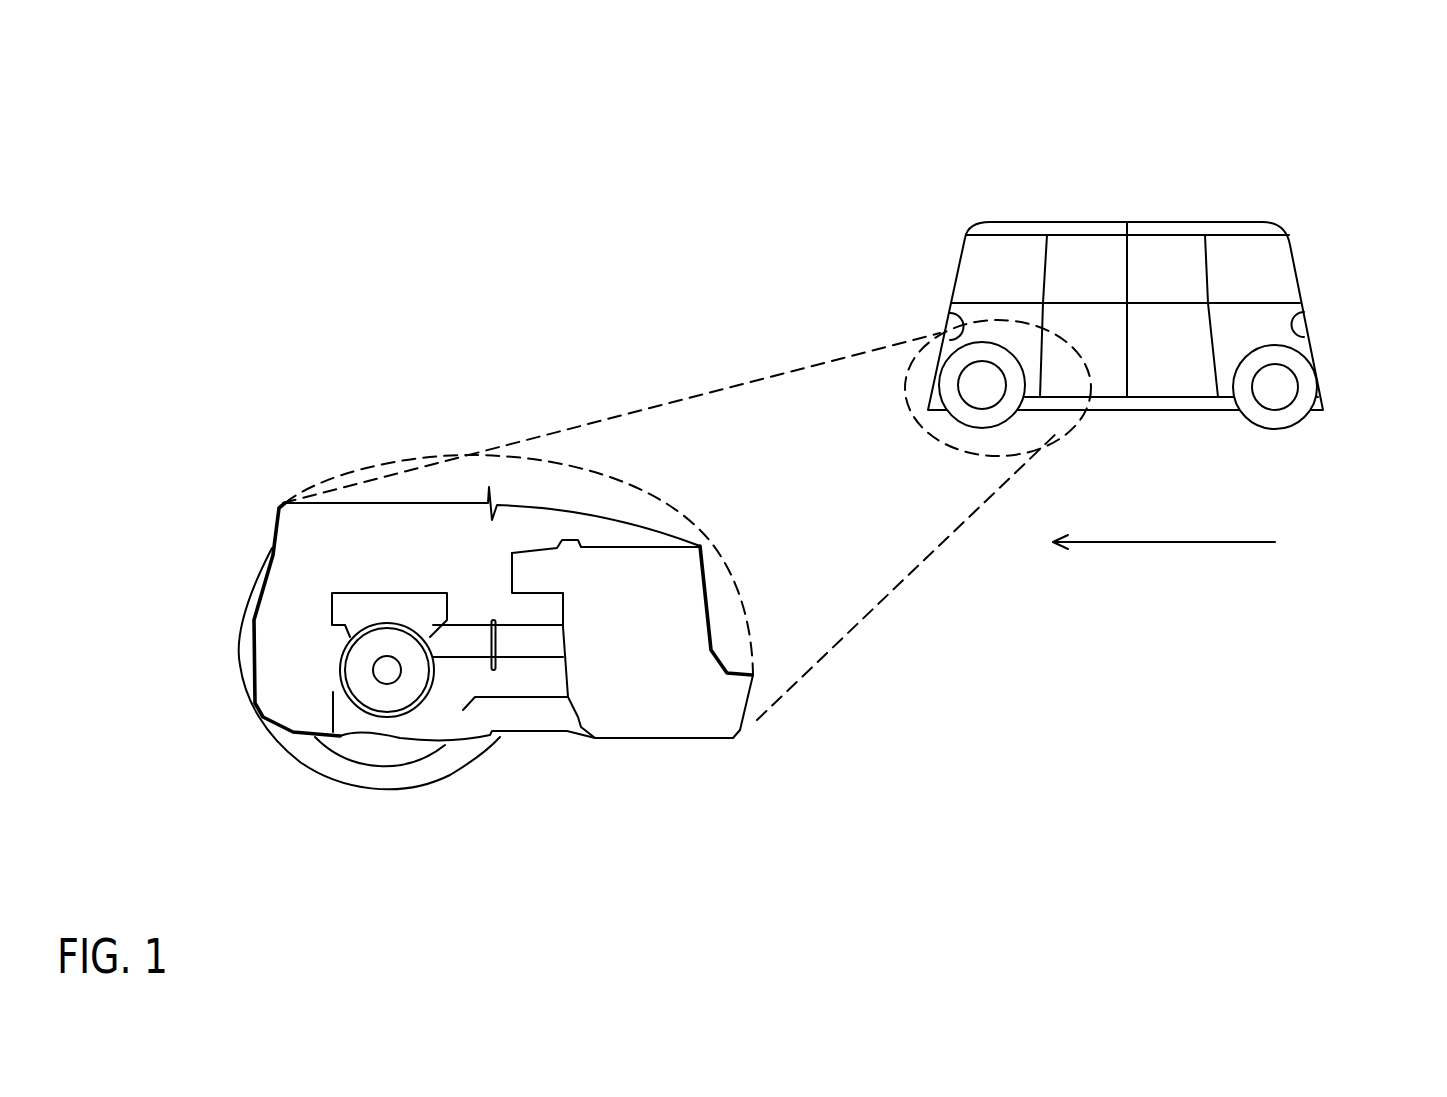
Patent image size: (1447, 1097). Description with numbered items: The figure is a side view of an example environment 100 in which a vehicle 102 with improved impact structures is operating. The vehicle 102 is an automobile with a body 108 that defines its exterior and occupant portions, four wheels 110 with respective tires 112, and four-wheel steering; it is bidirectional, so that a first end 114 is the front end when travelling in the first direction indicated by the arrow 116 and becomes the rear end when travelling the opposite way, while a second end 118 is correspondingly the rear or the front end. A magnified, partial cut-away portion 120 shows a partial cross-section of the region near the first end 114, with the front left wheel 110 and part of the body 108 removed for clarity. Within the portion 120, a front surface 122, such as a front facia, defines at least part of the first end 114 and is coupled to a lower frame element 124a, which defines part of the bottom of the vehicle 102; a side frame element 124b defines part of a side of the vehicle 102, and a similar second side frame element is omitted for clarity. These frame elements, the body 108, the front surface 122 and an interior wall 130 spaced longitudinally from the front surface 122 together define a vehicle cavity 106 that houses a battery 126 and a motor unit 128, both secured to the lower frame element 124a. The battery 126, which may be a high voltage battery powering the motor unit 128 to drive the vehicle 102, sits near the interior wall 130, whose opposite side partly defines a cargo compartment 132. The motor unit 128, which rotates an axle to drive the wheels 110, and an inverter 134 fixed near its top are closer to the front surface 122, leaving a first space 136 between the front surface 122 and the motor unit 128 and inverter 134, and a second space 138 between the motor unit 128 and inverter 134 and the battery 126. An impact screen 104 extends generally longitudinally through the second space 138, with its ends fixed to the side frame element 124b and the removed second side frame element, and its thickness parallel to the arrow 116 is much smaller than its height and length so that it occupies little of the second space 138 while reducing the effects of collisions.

The environment 100 is at (212, 83).
The vehicle 102 is at (965, 252).
The impact screen 104 is at (493, 622).
The vehicle cavity 106 is at (411, 544).
The body 108 is at (1018, 315).
The wheels 110 is at (1267, 397).
The tires 112 is at (1288, 417).
The first end 114 is at (955, 297).
The arrow 116 is at (1164, 533).
The second end 118 is at (1297, 295).
The partial cut-away portion 120 is at (652, 510).
The front surface 122 is at (255, 623).
The lower frame element 124a is at (493, 722).
The side frame element 124b is at (512, 640).
The battery 126 is at (670, 708).
The motor unit 128 is at (337, 662).
The interior wall 130 is at (714, 585).
The cargo compartment 132 is at (731, 629).
The inverter 134 is at (390, 593).
The first space 136 is at (290, 688).
The second space 138 is at (463, 693).